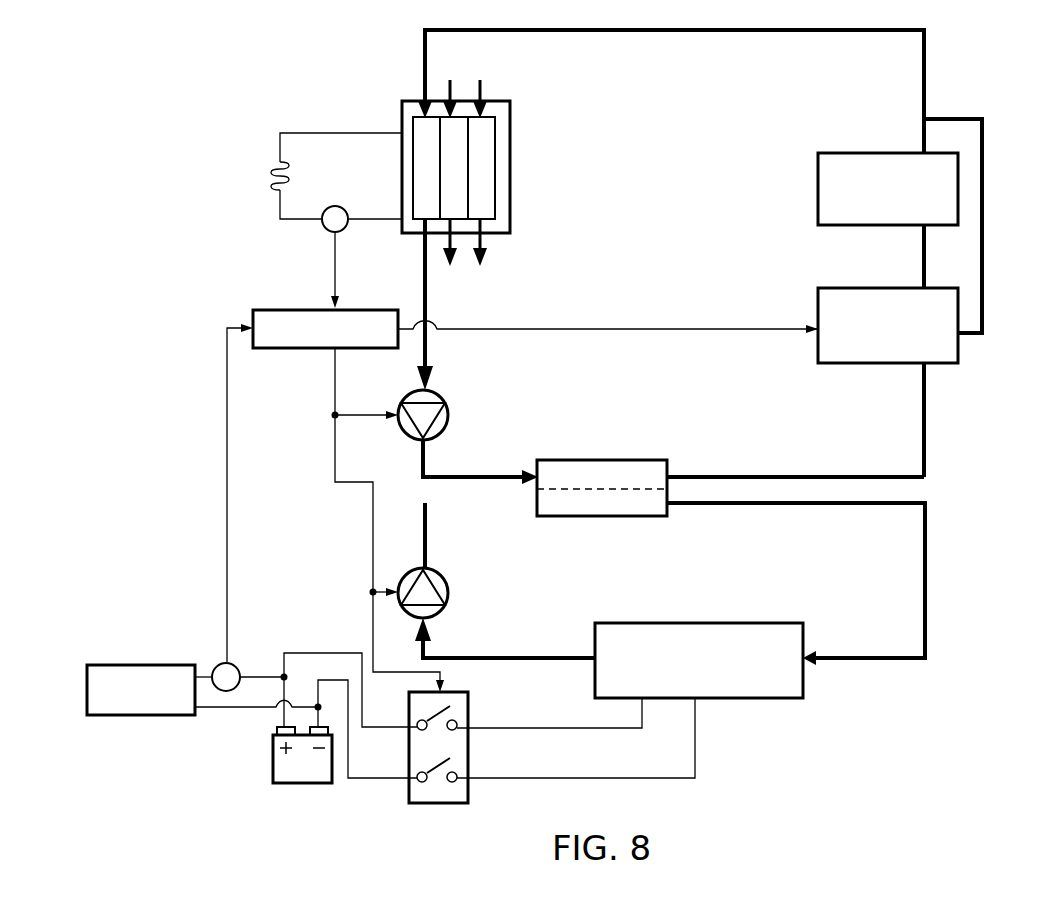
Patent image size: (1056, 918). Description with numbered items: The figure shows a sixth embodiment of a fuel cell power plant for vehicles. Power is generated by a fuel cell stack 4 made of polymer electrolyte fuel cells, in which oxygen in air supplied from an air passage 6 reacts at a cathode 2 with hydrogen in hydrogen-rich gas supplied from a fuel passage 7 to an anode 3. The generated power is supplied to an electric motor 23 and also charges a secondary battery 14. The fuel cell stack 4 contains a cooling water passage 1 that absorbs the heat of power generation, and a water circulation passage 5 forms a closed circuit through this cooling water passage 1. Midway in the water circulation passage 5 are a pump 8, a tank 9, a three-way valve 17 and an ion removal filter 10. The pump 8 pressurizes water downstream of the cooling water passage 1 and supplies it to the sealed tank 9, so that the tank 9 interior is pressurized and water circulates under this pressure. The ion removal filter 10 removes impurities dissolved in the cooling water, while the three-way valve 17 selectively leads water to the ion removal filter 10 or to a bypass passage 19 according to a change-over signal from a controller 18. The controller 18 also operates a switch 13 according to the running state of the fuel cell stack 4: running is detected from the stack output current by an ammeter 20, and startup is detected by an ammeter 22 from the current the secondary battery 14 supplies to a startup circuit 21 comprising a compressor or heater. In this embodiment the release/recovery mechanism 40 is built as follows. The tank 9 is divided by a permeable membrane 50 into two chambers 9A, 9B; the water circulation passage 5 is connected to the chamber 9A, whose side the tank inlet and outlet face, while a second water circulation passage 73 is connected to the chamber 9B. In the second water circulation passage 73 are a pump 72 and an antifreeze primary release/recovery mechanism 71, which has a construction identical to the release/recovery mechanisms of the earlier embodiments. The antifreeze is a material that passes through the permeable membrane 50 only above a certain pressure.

The cooling water passage 1 is at (420, 168).
The cathode 2 is at (455, 140).
The anode 3 is at (485, 200).
The fuel cell stack 4 is at (512, 172).
The water circulation passage 5 is at (924, 66).
The air passage 6 is at (450, 160).
The fuel passage 7 is at (480, 160).
The pump 8 is at (450, 415).
The tank 9 is at (548, 460).
The chamber 9A is at (645, 470).
The chamber 9B is at (645, 512).
The ion removal filter 10 is at (838, 153).
The switch 13 is at (468, 708).
The secondary battery 14 is at (273, 762).
The three-way valve 17 is at (838, 288).
The controller 18 is at (355, 309).
The bypass passage 19 is at (984, 137).
The ammeter 20 is at (322, 230).
The startup circuit 21 is at (160, 665).
The ammeter 22 is at (238, 665).
The electric motor 23 is at (270, 180).
The release/recovery mechanism 40 is at (945, 565).
The permeable membrane 50 is at (605, 489).
The antifreeze primary release/recovery mechanism 71 is at (760, 623).
The pump 72 is at (450, 590).
The second water circulation passage 73 is at (924, 570).